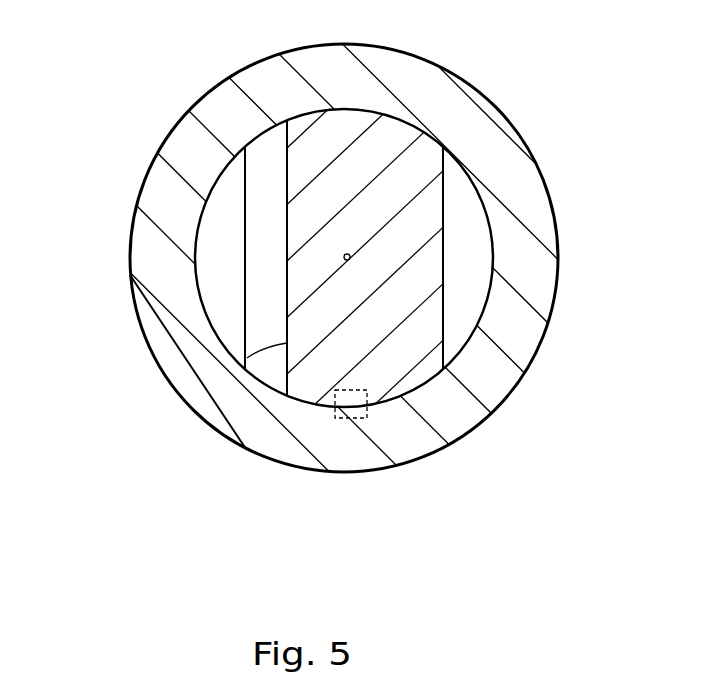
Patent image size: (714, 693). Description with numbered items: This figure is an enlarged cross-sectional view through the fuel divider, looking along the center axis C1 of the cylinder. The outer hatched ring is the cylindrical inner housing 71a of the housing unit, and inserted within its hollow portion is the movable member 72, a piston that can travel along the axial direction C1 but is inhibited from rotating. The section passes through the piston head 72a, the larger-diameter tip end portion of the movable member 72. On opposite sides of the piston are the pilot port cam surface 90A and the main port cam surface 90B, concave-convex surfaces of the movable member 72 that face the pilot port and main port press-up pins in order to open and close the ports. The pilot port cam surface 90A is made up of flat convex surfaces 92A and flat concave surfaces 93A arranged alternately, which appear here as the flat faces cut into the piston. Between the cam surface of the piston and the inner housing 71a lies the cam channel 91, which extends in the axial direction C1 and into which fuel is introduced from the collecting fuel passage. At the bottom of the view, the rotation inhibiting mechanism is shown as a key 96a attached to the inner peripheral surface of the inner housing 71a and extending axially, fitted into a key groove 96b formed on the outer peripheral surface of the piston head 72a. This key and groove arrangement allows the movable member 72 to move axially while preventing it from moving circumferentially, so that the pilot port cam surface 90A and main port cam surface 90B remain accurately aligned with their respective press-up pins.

The inner housing 71a is at (180, 150).
The movable member 72 is at (197, 293).
The piston head 72a is at (453, 195).
The pilot port cam surface 90A is at (260, 222).
The main port cam surface 90B is at (447, 291).
The cam channel 91 is at (220, 272).
The convex surface 92A is at (245, 318).
The concave surface 93A is at (287, 343).
The key 96a is at (350, 420).
The key groove 96b is at (346, 393).
The center axis C1 is at (349, 254).